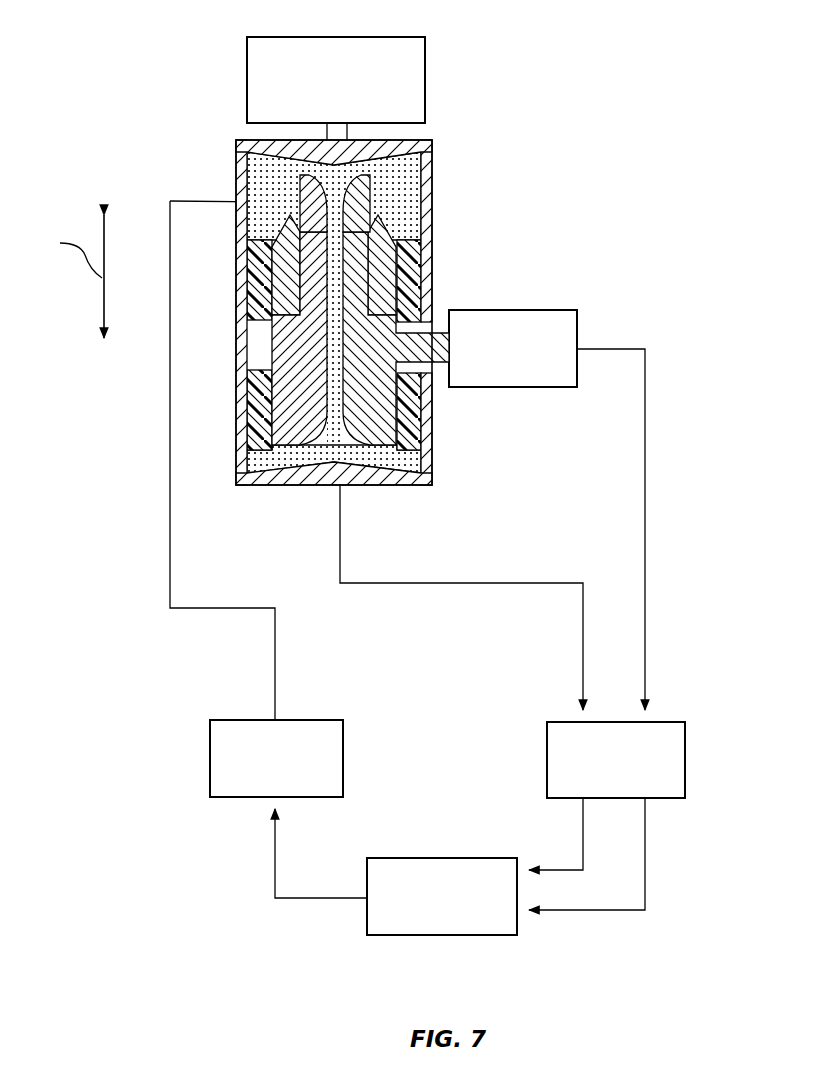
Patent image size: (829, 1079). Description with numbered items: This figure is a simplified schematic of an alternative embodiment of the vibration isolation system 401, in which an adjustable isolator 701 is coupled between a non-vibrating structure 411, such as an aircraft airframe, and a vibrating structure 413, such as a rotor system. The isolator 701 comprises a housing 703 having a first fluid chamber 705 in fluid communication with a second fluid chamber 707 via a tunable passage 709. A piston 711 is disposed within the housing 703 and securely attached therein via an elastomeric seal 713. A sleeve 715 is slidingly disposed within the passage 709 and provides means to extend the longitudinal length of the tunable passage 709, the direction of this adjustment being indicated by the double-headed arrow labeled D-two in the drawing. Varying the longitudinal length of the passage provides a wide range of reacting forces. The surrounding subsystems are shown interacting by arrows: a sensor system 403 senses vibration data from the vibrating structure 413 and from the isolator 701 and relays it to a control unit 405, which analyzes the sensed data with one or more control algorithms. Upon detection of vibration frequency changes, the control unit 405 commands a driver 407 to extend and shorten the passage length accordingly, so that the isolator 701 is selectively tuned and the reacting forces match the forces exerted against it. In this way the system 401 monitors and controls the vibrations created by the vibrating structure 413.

The vibration isolation system 401 is at (690, 64).
The sensor system 403 is at (685, 750).
The control unit 405 is at (475, 935).
The driver 407 is at (210, 760).
The non-vibrating structure 411 is at (425, 80).
The vibrating structure 413 is at (578, 338).
The adjustable isolator 701 is at (146, 78).
The housing 703 is at (432, 183).
The first fluid chamber 705 is at (263, 174).
The second fluid chamber 707 is at (405, 465).
The tunable passage 709 is at (316, 357).
The piston 711 is at (415, 277).
The elastomeric seal 713 is at (418, 410).
The sleeve 715 is at (370, 200).